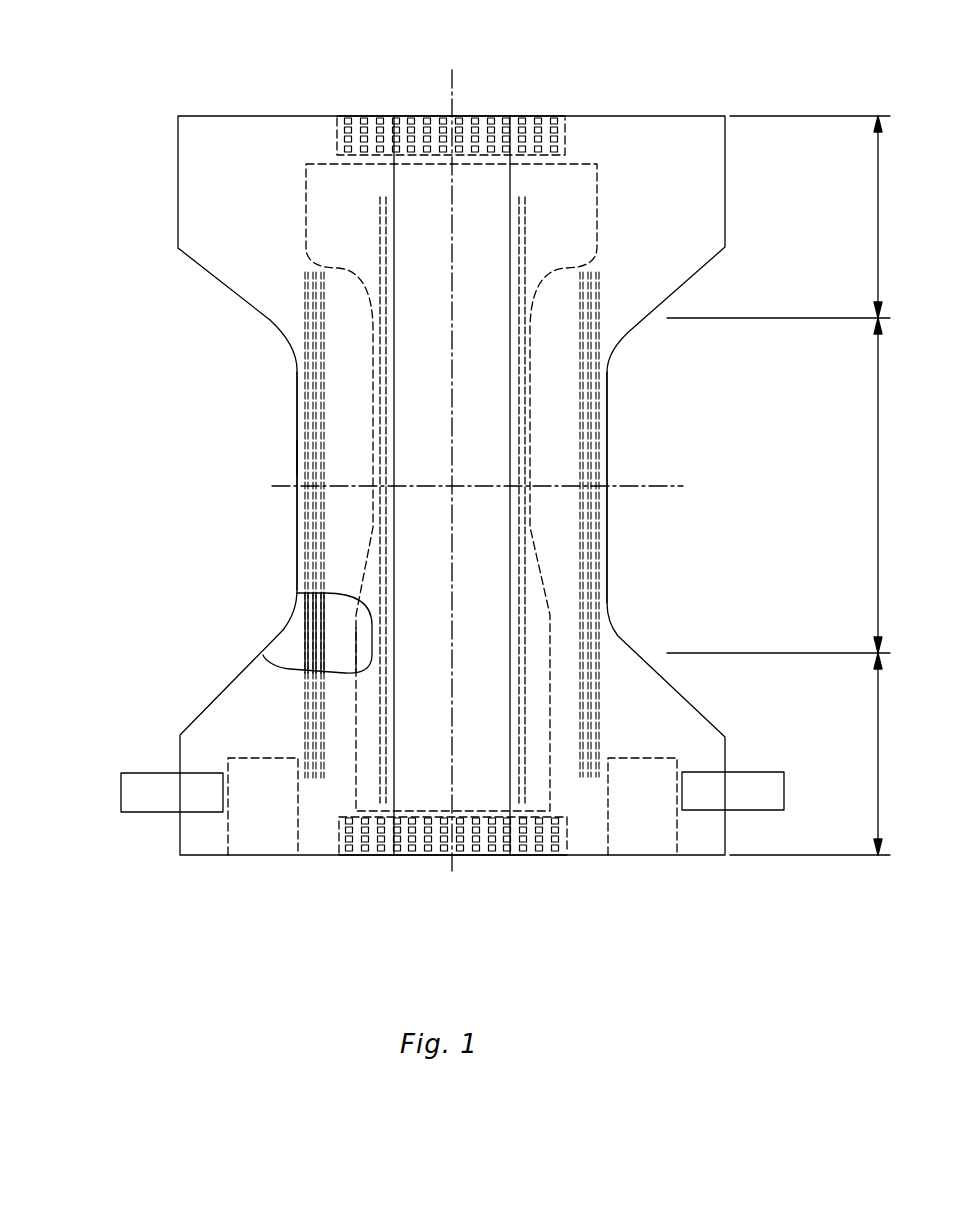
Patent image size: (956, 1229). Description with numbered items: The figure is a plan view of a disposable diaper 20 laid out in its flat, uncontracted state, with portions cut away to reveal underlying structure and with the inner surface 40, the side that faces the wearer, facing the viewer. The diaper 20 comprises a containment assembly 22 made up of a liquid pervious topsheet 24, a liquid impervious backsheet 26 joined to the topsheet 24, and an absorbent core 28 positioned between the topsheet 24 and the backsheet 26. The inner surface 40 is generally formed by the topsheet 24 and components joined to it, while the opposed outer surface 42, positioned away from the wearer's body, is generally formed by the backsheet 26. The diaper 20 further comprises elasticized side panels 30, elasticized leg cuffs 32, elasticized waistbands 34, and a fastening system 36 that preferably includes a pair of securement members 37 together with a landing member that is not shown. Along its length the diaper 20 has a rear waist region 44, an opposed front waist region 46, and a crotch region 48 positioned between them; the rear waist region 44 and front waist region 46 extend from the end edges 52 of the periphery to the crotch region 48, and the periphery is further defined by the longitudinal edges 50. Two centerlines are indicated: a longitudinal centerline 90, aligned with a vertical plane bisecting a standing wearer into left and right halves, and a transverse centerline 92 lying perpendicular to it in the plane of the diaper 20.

The diaper 20 is at (145, 108).
The containment assembly 22 is at (441, 278).
The liquid pervious topsheet 24 is at (482, 375).
The liquid impervious backsheet 26 is at (288, 649).
The absorbent core 28 is at (362, 640).
The elasticized side panels 30 is at (266, 827).
The elasticized leg cuffs 32 is at (604, 575).
The elasticized waistbands 34 is at (541, 124).
The fastening system 36 is at (426, 850).
The securement members 37 is at (155, 800).
The inner surface 40 is at (475, 468).
The outer surface 42 is at (297, 457).
The rear waist region 44 is at (878, 753).
The front waist region 46 is at (878, 215).
The crotch region 48 is at (878, 486).
The longitudinal edges 50 is at (297, 397).
The end edges 52 is at (402, 116).
The longitudinal centerline 90 is at (455, 82).
The transverse centerline 92 is at (683, 486).